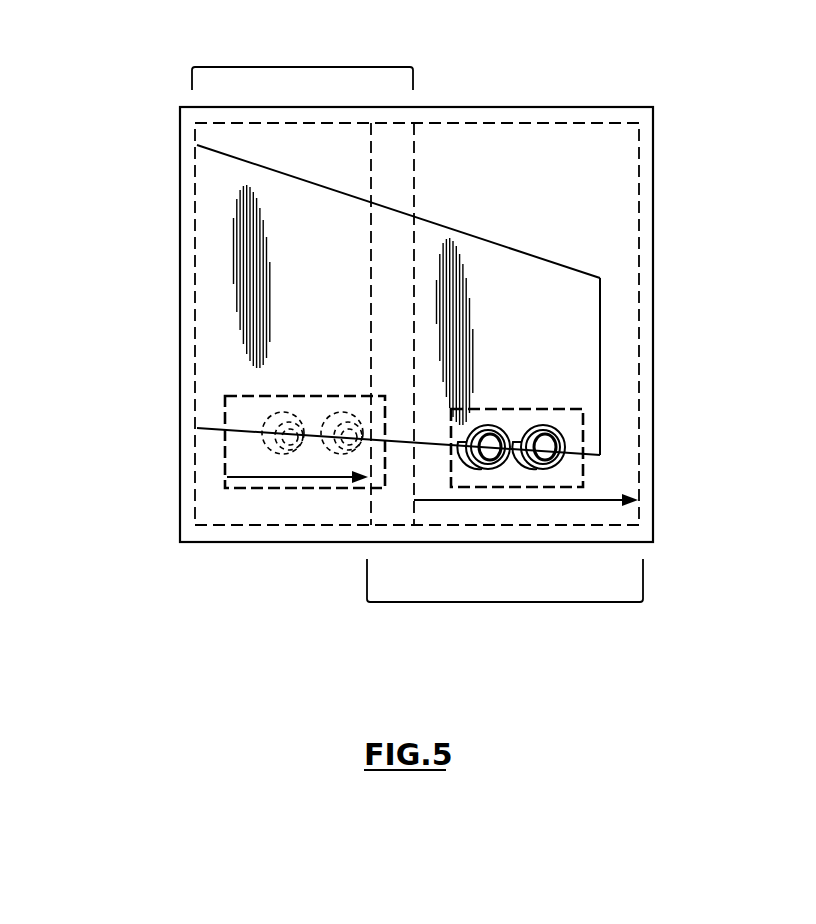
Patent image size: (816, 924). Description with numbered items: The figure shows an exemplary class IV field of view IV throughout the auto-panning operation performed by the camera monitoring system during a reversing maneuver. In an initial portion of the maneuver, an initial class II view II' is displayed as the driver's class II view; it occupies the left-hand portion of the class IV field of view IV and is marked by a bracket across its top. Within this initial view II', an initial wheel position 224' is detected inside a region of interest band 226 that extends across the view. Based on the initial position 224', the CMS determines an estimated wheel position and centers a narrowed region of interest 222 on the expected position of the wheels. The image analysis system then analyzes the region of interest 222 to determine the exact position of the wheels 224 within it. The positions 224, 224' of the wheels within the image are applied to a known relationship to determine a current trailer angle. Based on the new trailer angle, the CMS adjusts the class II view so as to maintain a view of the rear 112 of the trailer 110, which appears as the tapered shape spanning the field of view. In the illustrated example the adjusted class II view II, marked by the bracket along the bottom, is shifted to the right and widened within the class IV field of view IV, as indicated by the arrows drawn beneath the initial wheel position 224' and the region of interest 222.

The trailer 110 is at (540, 321).
The rear of the trailer 112 is at (600, 355).
The narrowed region of interest 222 is at (517, 409).
The wheels 224 is at (526, 506).
The initial wheel position 224' is at (305, 416).
The region of interest band 226 is at (175, 387).
The class II view II is at (505, 615).
The initial class II view II' is at (302, 46).
The class IV field of view IV is at (650, 107).